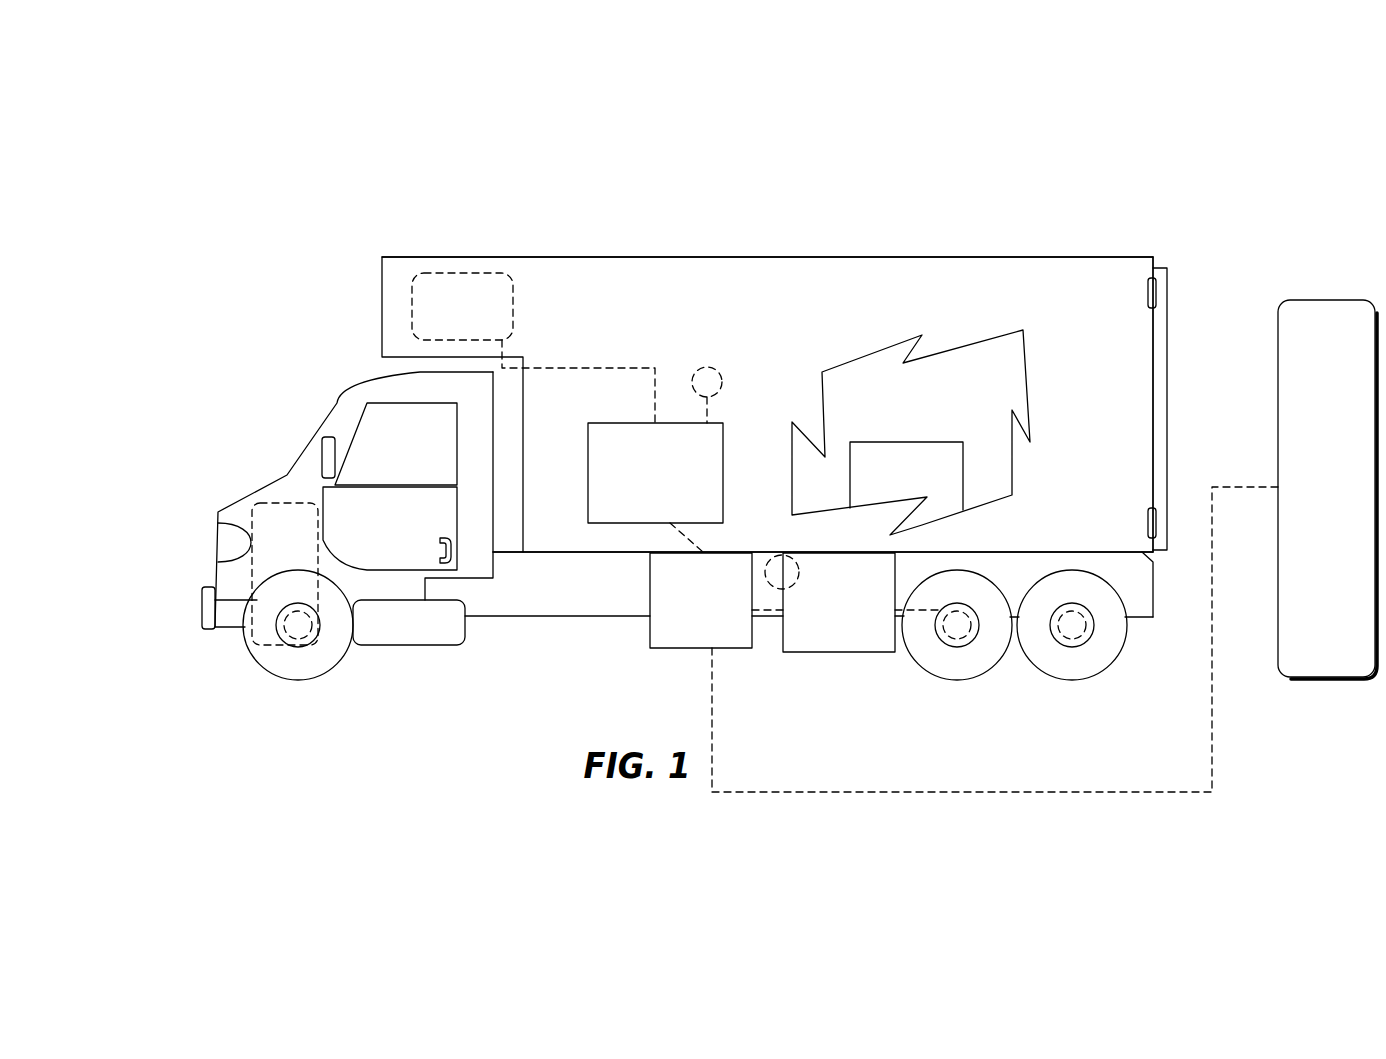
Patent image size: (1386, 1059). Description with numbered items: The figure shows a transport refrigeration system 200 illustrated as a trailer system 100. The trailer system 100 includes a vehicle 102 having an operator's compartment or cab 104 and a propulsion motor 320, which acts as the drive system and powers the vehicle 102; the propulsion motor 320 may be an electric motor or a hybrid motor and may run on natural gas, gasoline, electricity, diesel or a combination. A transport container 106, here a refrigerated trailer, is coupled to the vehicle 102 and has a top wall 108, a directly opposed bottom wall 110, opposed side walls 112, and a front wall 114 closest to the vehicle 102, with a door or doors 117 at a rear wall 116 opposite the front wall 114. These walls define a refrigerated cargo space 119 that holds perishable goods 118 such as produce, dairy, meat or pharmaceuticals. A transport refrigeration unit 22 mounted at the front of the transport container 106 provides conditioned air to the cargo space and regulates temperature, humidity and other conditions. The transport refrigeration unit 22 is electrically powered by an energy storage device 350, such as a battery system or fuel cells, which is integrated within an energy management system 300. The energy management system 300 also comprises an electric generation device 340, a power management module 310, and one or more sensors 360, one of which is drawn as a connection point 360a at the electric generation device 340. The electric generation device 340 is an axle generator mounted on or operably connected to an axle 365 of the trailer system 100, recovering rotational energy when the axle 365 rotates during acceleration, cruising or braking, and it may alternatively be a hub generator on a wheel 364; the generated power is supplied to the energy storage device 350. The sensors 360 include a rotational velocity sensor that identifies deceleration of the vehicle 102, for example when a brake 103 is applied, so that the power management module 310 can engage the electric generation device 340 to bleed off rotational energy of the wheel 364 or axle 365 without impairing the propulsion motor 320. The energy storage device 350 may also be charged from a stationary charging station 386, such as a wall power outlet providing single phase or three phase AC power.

The trailer system 100 is at (357, 135).
The transport refrigeration system 200 is at (520, 210).
The transport refrigeration unit 22 is at (445, 257).
The vehicle 102 is at (223, 630).
The brake 103 is at (922, 628).
The cab 104 is at (368, 437).
The transport container 106 is at (890, 277).
The top wall 108 is at (732, 257).
The bottom wall 110 is at (997, 548).
The side walls 112 is at (786, 319).
The front wall 114 is at (527, 532).
The rear wall 116 is at (1153, 352).
The door 117 is at (1160, 400).
The perishable goods 118 is at (914, 485).
The refrigerated cargo space 119 is at (962, 370).
The energy management system 300 is at (1270, 803).
The power management module 310 is at (592, 433).
The propulsion motor 320 is at (283, 503).
The electric generation device 340 is at (813, 652).
The energy storage device 350 is at (682, 650).
The sensors 360 is at (692, 375).
The connection point 360a is at (782, 555).
The wheel 364 is at (993, 667).
The axle 365 is at (965, 640).
The charging station 386 is at (1342, 680).